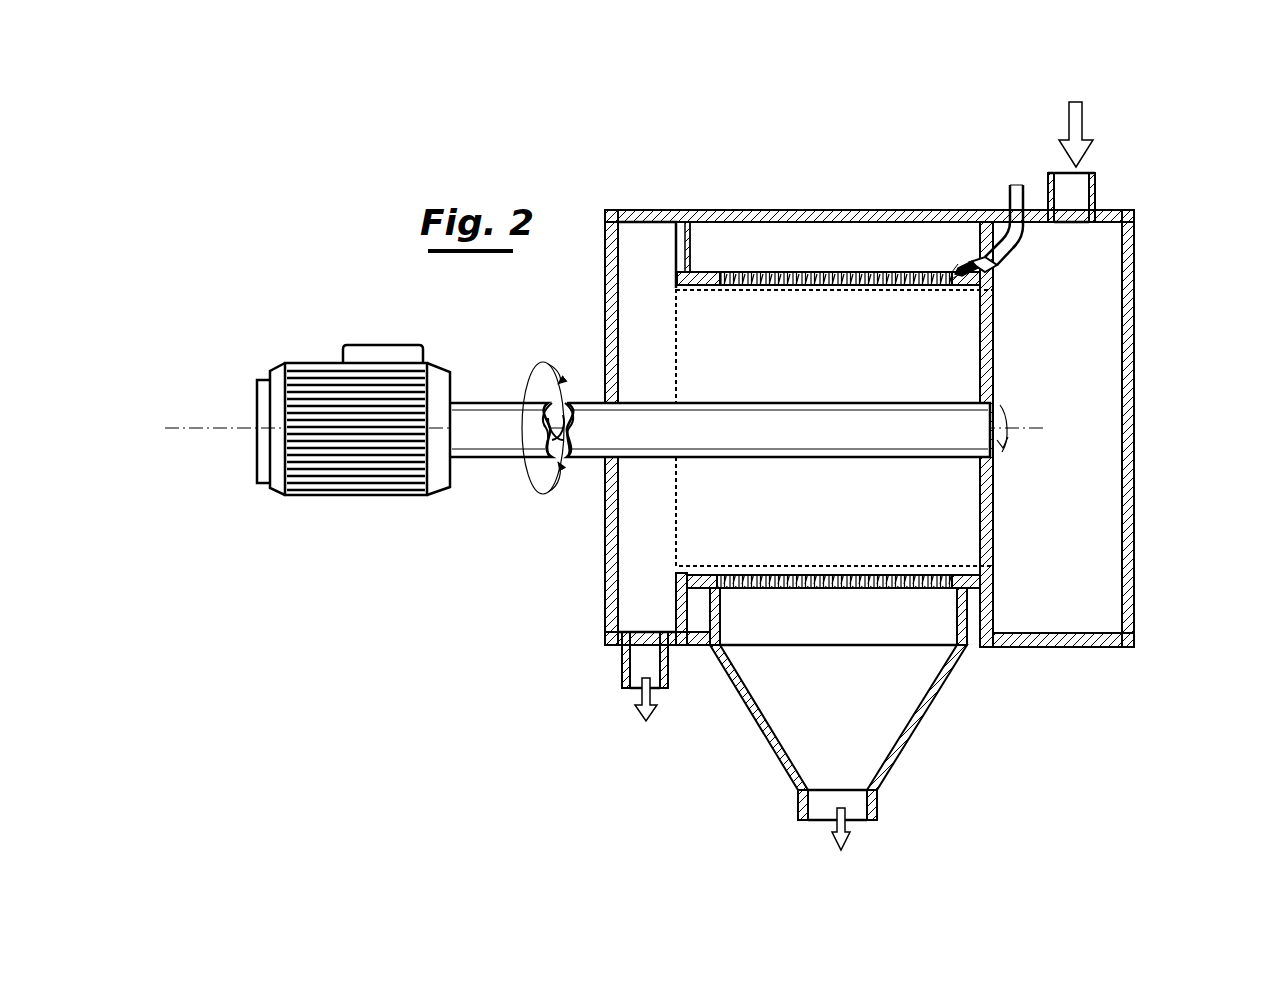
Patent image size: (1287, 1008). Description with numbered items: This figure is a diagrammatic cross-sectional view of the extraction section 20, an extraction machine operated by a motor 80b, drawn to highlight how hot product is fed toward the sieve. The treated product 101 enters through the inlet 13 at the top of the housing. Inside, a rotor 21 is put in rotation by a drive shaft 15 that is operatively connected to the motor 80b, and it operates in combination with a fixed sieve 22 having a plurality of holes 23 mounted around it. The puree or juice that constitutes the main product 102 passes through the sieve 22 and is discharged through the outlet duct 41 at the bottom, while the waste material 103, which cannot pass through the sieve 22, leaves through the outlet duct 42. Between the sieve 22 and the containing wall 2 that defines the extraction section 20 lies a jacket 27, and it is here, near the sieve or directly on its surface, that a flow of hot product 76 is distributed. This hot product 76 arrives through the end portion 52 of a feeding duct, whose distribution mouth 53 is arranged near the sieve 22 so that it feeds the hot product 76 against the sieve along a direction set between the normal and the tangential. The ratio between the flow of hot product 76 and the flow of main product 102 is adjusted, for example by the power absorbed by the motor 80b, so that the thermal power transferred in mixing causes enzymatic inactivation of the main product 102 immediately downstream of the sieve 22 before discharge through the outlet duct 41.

The containing wall 2 is at (740, 222).
The inlet 13 is at (1096, 190).
The drive shaft 15 is at (506, 400).
The extraction section 20 is at (1176, 532).
The rotor 21 is at (998, 358).
The sieve 22 is at (893, 268).
The holes 23 is at (877, 270).
The jacket 27 is at (785, 242).
The outlet duct 41 is at (876, 800).
The outlet duct 42 is at (626, 680).
The end portion 52 is at (1010, 190).
The distribution mouth 53 is at (997, 250).
The flow of hot product 76 is at (961, 256).
The motor 80b is at (372, 508).
The treated product 101 is at (1073, 120).
The main product 102 is at (832, 832).
The waste material 103 is at (643, 722).